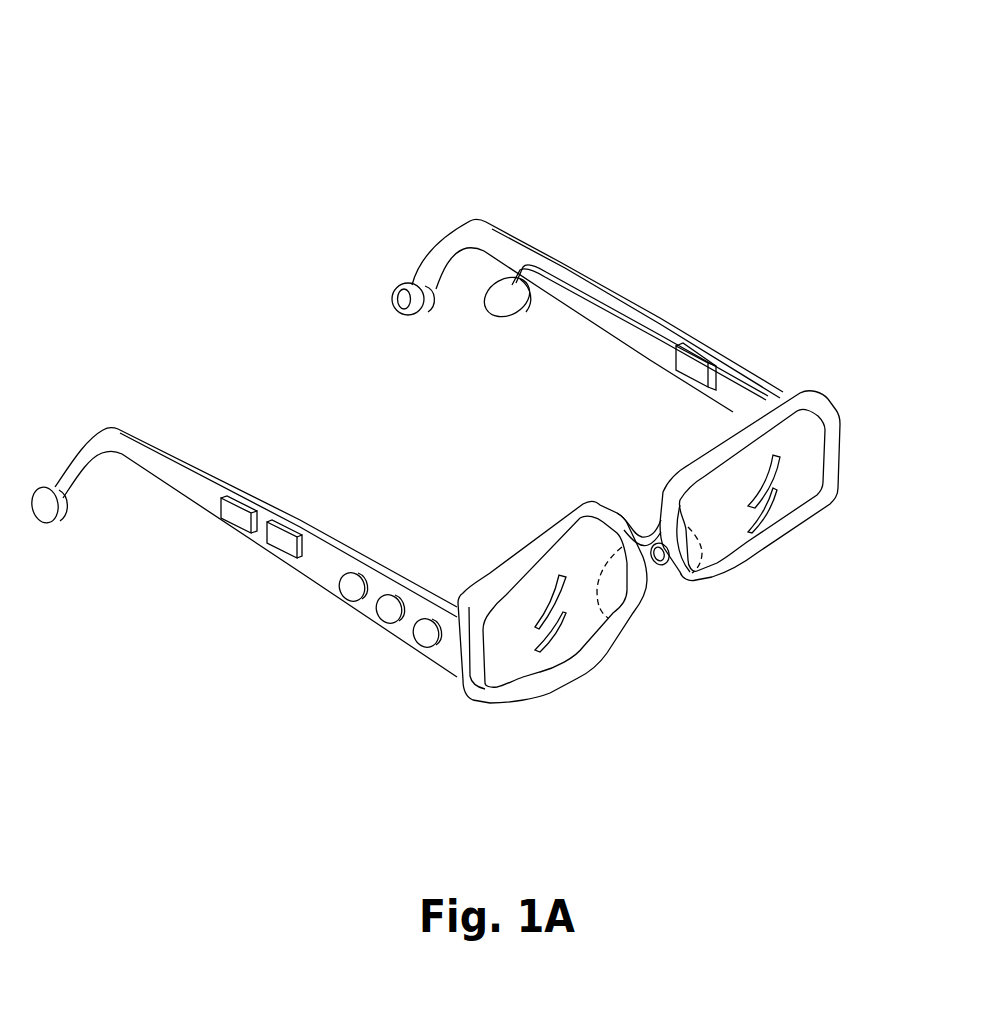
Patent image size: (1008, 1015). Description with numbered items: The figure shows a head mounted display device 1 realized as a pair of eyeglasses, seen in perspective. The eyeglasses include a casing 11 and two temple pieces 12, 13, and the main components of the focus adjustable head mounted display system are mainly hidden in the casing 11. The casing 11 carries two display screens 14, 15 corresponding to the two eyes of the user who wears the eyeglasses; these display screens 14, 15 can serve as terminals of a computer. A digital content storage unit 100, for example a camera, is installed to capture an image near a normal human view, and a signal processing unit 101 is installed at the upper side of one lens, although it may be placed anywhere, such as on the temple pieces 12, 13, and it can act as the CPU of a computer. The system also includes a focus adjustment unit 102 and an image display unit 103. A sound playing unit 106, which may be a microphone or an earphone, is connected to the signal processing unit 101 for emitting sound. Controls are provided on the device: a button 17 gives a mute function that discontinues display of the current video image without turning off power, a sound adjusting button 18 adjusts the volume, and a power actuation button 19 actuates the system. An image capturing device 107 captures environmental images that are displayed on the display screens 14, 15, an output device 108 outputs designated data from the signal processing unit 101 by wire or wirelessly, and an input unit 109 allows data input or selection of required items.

The head mounted display device 1 is at (422, 87).
The casing 11 is at (555, 524).
The temple piece 12 is at (652, 330).
The temple piece 13 is at (320, 565).
The display screen 14 is at (575, 640).
The display screen 15 is at (773, 523).
The button 17 is at (436, 301).
The sound adjusting button 18 is at (388, 617).
The power actuation button 19 is at (353, 592).
The digital content storage unit 100 is at (690, 370).
The signal processing unit 101 is at (603, 605).
The focus adjustment unit 102 is at (667, 540).
The image display unit 103 is at (702, 712).
The sound playing unit 106 is at (510, 310).
The image capturing device 107 is at (667, 562).
The output device 108 is at (280, 538).
The input unit 109 is at (231, 508).